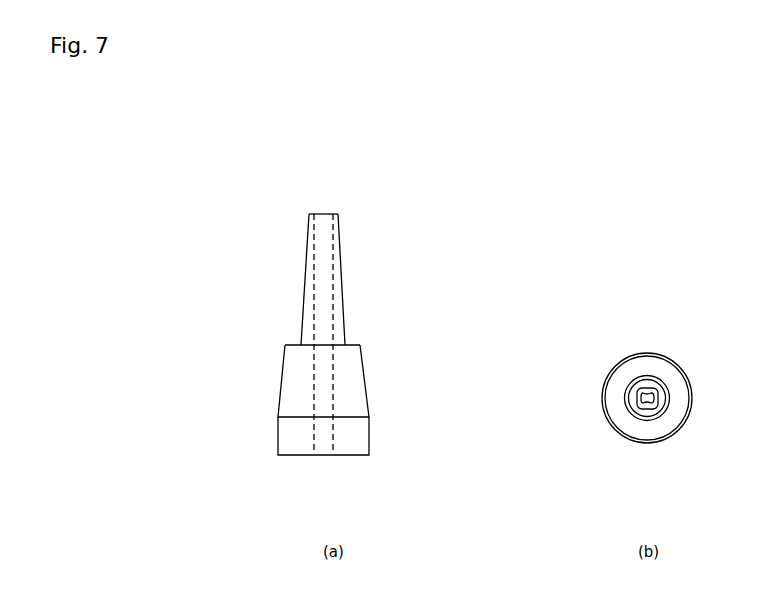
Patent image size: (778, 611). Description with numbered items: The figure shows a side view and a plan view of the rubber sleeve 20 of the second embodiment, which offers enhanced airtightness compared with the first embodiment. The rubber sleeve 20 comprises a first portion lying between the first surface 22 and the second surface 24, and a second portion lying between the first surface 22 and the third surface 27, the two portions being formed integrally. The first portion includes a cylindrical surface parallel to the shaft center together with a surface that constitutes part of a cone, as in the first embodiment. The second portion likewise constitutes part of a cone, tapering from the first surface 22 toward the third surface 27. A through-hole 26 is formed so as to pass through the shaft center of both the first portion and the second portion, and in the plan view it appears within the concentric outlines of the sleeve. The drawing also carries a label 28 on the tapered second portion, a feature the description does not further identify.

The nozzle 20 is at (273, 400).
The flange portion 22 is at (288, 344).
The base portion 24 is at (297, 455).
The tip outer surface 26 is at (339, 268).
The discharge opening 27 is at (310, 213).
The inner passage 28 is at (309, 268).